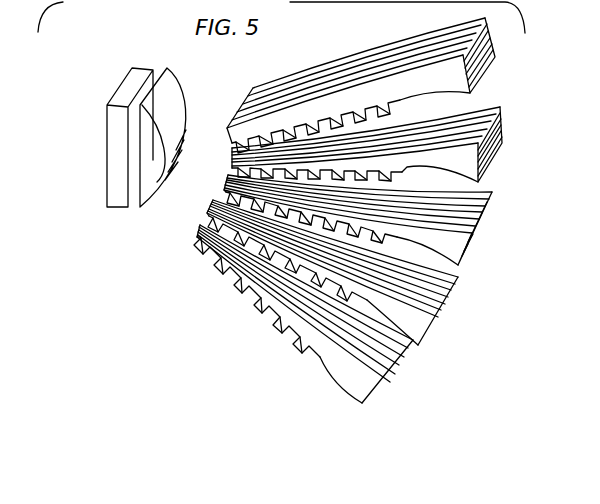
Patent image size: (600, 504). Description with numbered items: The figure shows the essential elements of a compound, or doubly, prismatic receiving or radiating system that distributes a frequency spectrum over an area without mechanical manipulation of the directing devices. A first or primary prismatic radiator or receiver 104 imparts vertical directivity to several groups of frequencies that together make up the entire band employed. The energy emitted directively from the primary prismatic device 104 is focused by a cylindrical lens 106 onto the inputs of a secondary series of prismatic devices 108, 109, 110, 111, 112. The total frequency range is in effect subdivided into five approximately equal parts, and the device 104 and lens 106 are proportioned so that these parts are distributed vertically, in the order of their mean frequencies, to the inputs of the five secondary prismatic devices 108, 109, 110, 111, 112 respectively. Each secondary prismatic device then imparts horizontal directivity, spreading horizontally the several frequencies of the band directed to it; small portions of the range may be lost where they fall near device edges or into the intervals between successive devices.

The primary prismatic radiator or receiver 104 is at (112, 133).
The cylindrical lens 106 is at (170, 83).
The secondary prismatic device 108 is at (360, 400).
The secondary prismatic device 109 is at (452, 278).
The secondary prismatic device 110 is at (480, 193).
The secondary prismatic device 111 is at (483, 110).
The secondary prismatic device 112 is at (405, 53).